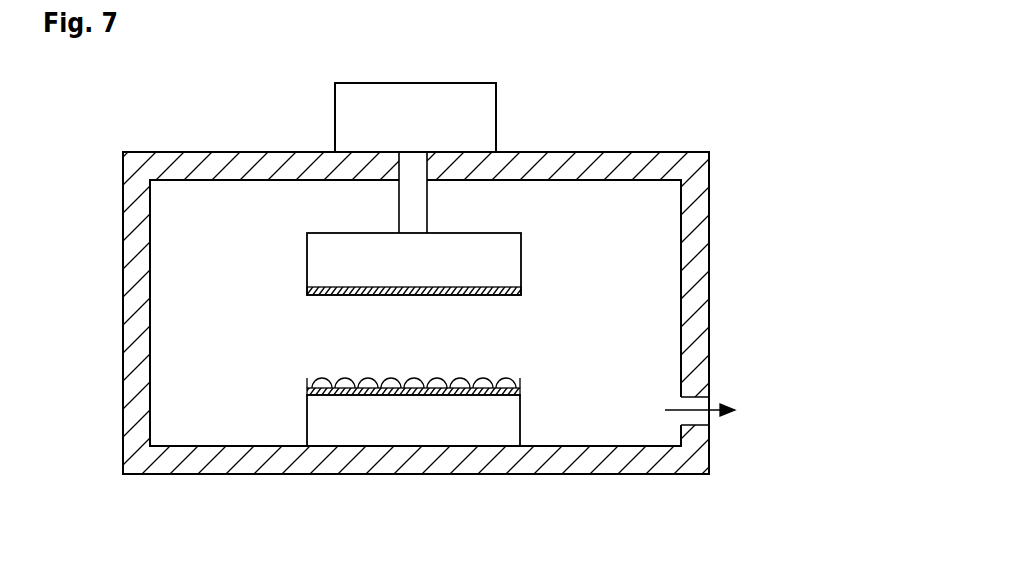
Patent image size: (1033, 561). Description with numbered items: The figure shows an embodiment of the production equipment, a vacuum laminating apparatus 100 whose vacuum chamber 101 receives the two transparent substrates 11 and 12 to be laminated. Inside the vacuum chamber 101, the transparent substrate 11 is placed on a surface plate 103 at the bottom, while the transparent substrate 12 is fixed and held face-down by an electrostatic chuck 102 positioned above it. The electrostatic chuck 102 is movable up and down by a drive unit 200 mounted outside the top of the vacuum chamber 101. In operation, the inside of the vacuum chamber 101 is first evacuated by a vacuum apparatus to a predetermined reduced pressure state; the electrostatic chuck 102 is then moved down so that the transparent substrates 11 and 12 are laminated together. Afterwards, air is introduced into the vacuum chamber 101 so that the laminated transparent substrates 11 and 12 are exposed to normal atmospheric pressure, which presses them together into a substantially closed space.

The vacuum laminating apparatus 100 is at (741, 102).
The vacuum chamber 101 is at (627, 152).
The electrostatic chuck 102 is at (307, 258).
The surface plate 103 is at (320, 427).
The transparent substrate 11 is at (307, 289).
The transparent substrate 12 is at (307, 387).
The drive unit 200 is at (497, 122).